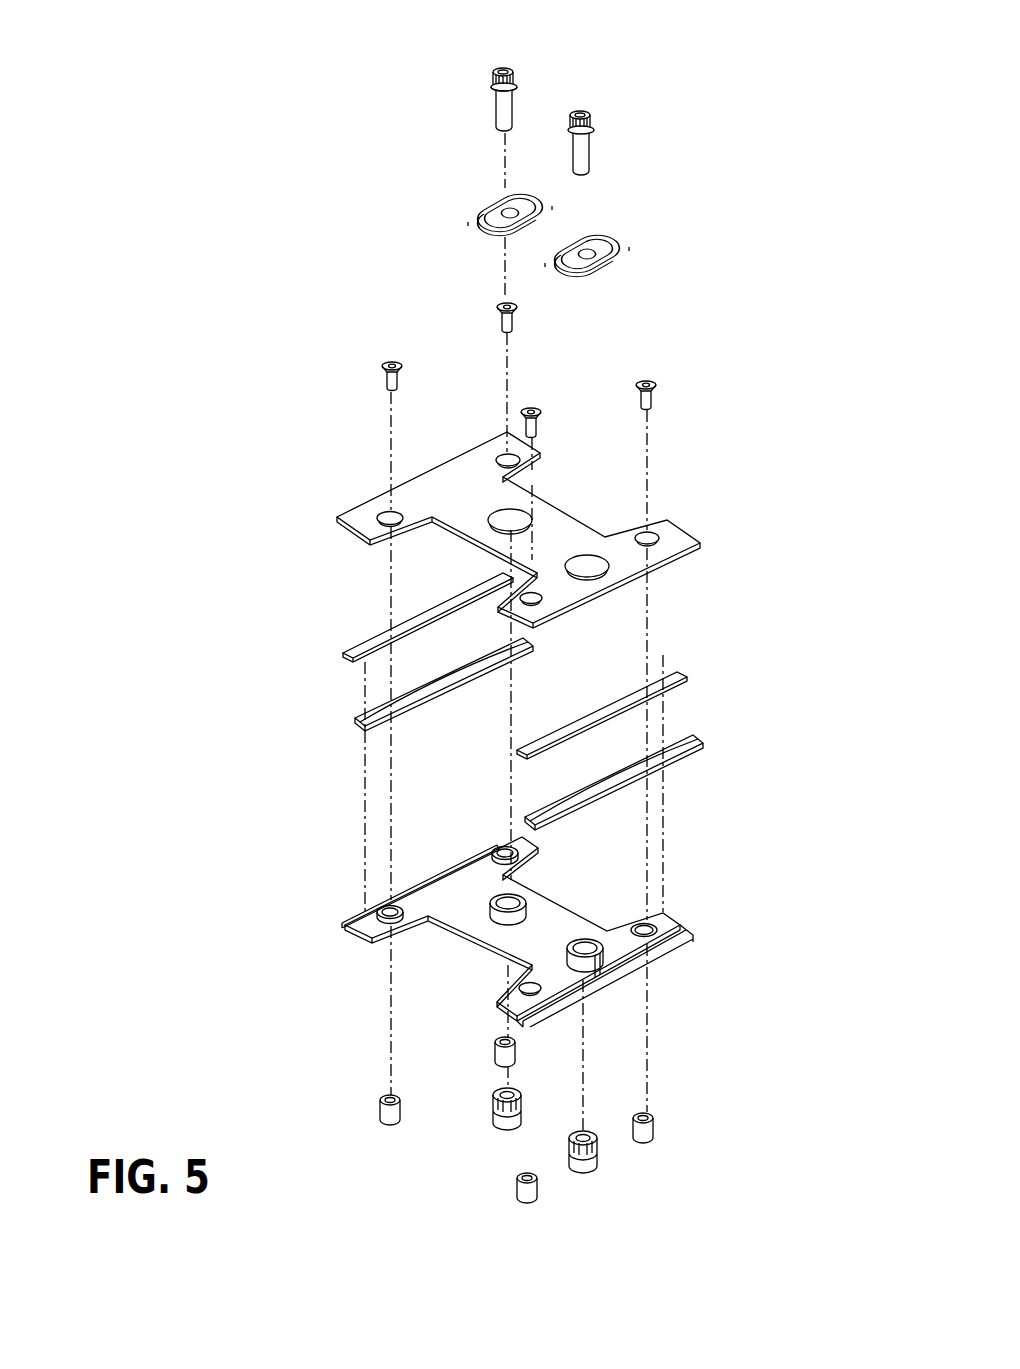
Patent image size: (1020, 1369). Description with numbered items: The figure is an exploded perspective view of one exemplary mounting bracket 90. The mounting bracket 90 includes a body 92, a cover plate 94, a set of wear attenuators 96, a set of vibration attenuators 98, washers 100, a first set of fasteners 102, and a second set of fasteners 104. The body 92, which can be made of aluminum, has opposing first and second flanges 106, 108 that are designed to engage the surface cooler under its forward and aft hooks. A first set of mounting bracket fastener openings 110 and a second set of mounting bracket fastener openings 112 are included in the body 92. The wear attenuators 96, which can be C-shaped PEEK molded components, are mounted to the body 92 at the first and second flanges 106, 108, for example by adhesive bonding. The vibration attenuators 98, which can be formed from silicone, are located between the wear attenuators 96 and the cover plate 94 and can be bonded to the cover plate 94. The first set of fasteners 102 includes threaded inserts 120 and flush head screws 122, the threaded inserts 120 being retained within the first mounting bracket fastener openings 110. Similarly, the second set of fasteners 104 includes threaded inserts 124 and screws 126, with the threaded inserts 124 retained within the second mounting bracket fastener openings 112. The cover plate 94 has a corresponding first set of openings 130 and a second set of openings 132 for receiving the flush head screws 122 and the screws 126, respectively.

The mounting bracket 90 is at (200, 247).
The body 92 is at (515, 917).
The cover plate 94 is at (525, 530).
The set of wear attenuators 96 is at (355, 718).
The set of vibration attenuators 98 is at (345, 652).
The washers 100 is at (492, 213).
The first set of fasteners 102 is at (517, 759).
The second set of fasteners 104 is at (547, 630).
The first flange 106 is at (672, 945).
The second flange 108 is at (352, 926).
The first set of mounting bracket fastener openings 110 is at (384, 908).
The second set of mounting bracket fastener openings 112 is at (578, 936).
The threaded inserts 120 is at (496, 1052).
The flush head screws 122 is at (388, 362).
The threaded inserts 124 is at (571, 1139).
The screws 126 is at (503, 110).
The first set of openings 130 is at (500, 456).
The second set of openings 132 is at (572, 555).